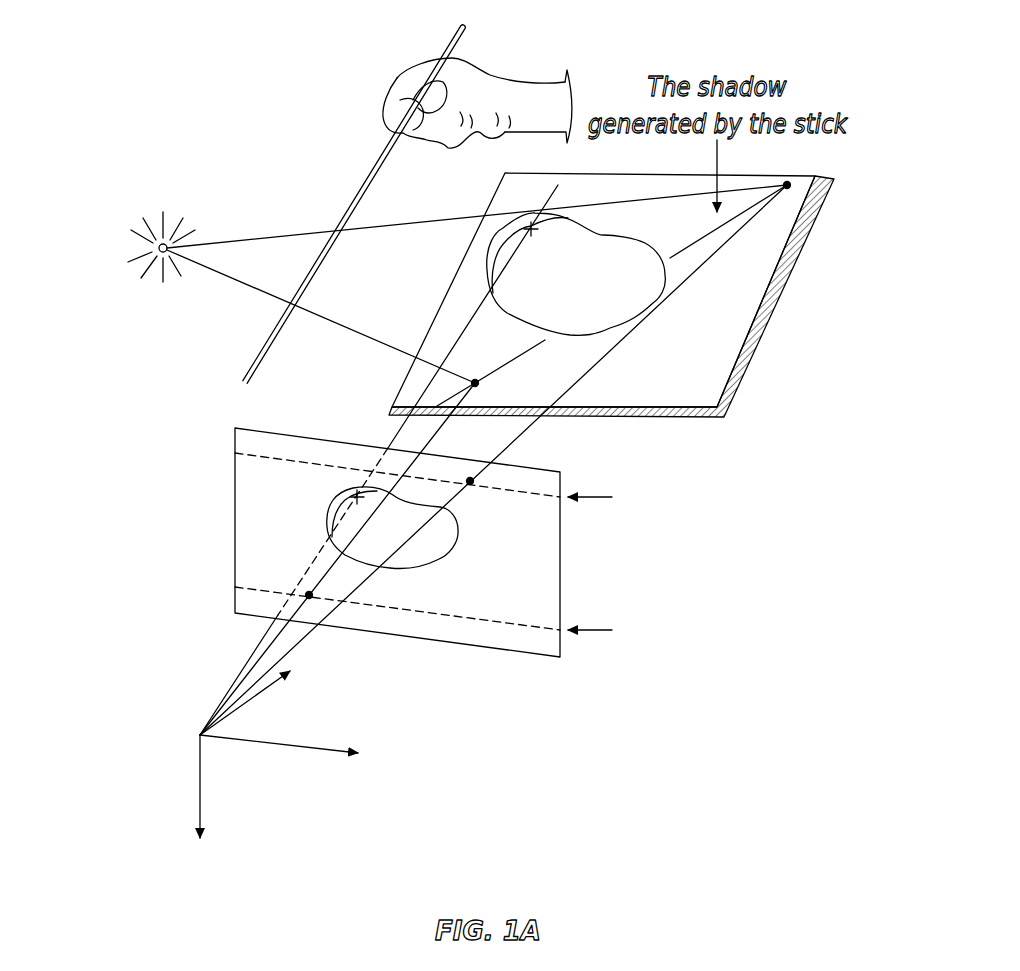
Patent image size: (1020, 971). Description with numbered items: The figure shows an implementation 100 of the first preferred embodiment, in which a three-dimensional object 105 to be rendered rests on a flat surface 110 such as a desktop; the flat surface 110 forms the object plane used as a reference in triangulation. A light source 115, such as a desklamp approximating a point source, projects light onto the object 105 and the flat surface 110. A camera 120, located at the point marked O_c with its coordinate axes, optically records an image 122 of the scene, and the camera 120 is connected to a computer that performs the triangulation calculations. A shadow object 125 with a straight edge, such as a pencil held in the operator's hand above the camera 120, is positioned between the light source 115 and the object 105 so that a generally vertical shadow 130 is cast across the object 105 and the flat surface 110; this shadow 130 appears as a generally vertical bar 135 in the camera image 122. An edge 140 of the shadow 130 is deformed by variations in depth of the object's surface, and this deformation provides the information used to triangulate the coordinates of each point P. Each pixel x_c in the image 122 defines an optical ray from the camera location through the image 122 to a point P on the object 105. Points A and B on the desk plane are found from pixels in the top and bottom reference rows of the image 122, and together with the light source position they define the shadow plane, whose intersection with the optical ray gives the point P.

The implementation 100 is at (243, 93).
The 3D object 105 is at (613, 274).
The flat surface 110 is at (629, 295).
The light source 115 is at (434, 284).
The camera 120 is at (457, 526).
The image 122 is at (525, 542).
The shadow object (pencil) 125 is at (407, 204).
The shadow 130 is at (624, 294).
The vertical bar 135 is at (361, 460).
The shadow edge 140 is at (559, 255).